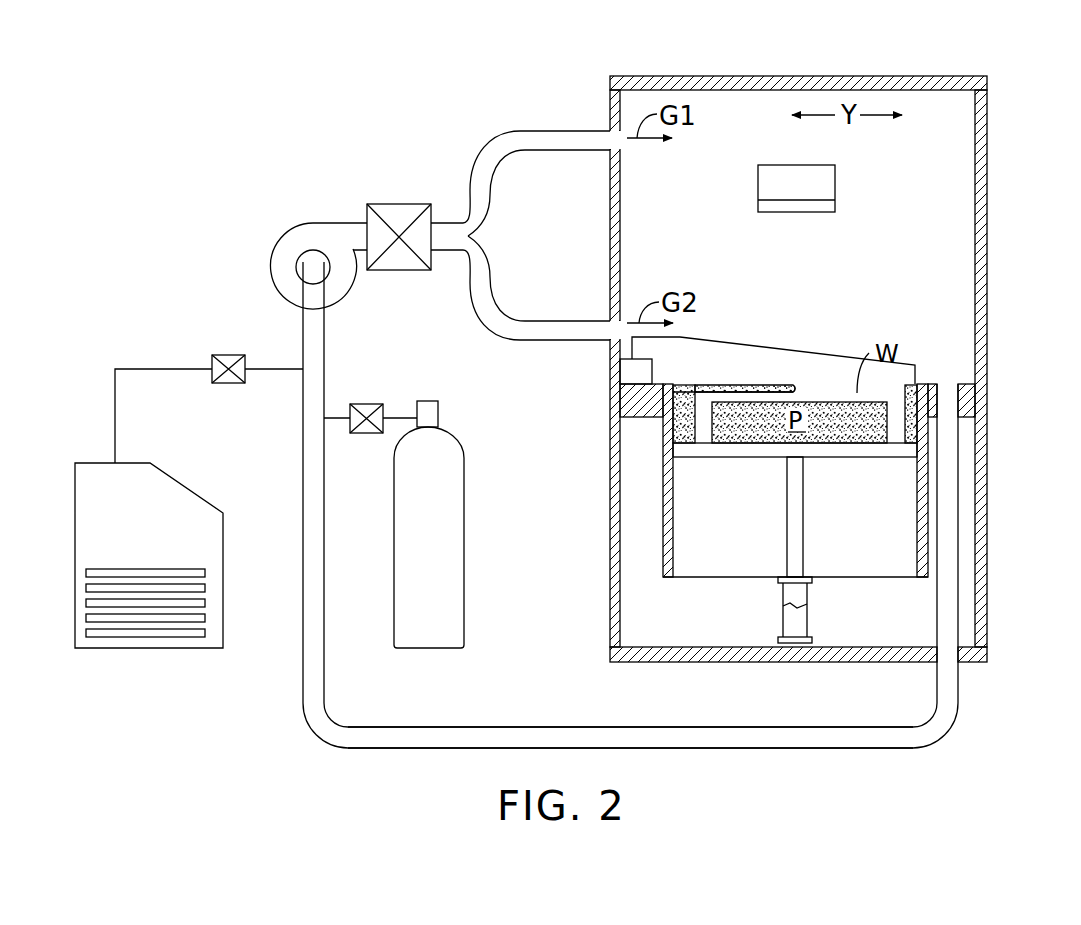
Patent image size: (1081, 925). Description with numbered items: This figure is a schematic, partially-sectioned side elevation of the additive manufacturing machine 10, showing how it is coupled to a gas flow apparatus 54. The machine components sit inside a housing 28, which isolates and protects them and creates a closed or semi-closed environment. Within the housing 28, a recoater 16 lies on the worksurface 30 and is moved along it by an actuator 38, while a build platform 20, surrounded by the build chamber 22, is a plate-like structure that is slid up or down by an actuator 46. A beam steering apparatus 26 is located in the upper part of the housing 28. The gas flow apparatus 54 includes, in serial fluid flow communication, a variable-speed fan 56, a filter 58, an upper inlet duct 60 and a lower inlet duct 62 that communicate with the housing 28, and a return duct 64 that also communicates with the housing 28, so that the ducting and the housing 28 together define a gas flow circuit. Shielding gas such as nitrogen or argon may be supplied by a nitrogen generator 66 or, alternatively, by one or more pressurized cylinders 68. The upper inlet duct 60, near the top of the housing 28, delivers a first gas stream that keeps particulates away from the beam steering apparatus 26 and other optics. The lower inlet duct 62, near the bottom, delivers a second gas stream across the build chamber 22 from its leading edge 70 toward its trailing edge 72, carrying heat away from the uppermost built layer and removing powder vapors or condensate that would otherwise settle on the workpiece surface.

The additive manufacturing machine 10 is at (964, 71).
The recoater 16 is at (725, 353).
The build platform 20 is at (738, 452).
The build chamber 22 is at (663, 546).
The beam steering apparatus 26 is at (820, 176).
The housing 28 is at (818, 76).
The worksurface 30 is at (964, 373).
The actuator 38 is at (636, 372).
The actuator 46 is at (797, 521).
The gas flow apparatus 54 is at (217, 262).
The variable-speed fan 56 is at (306, 234).
The filter 58 is at (397, 202).
The upper inlet duct 60 is at (532, 133).
The lower inlet duct 62 is at (503, 323).
The return duct 64 is at (948, 512).
The nitrogen generator 66 is at (154, 537).
The pressurized cylinder 68 is at (446, 575).
The leading edge 70 is at (669, 396).
The trailing edge 72 is at (932, 384).